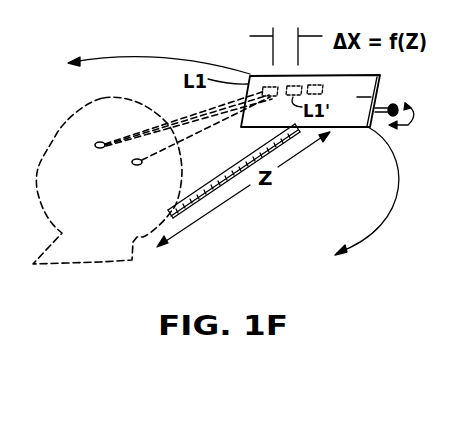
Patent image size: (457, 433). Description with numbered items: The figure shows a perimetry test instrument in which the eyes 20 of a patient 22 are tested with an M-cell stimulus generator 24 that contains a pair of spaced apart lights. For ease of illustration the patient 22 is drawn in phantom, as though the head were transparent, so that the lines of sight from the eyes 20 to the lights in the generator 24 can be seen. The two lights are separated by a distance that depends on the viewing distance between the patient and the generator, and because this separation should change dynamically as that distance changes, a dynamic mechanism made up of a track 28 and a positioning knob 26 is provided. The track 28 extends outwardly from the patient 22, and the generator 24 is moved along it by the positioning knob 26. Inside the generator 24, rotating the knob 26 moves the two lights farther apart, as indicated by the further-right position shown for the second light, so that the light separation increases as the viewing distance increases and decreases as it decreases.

The eyes 20 is at (183, 138).
The patient 22 is at (63, 133).
The M-cell stimulus generator 24 is at (376, 97).
The positioning knob 26 is at (389, 179).
The track 28 is at (244, 155).